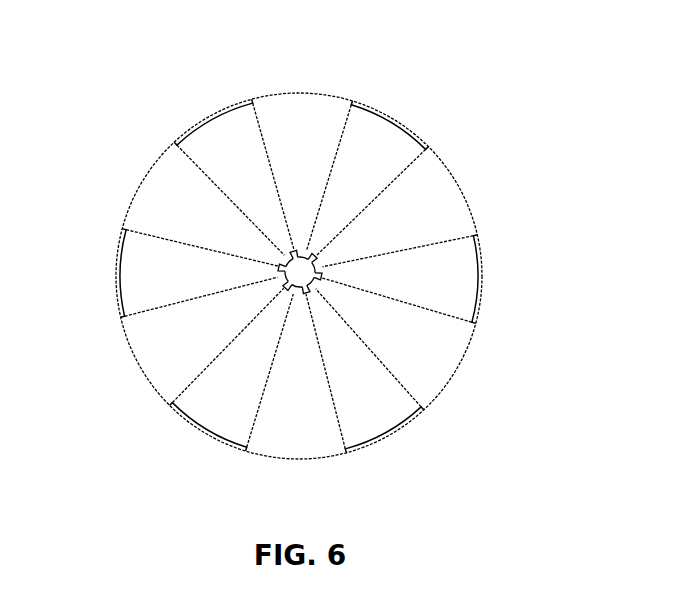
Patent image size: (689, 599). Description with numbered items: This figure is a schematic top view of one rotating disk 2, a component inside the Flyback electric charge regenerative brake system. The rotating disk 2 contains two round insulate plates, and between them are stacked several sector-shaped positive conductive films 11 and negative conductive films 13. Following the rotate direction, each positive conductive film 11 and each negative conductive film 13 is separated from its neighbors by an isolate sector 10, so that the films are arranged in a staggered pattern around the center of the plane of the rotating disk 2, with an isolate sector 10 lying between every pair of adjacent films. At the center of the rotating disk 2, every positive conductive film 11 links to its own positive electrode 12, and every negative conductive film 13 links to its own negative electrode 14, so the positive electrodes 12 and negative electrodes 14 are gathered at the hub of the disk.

The rotating disk 2 is at (356, 58).
The isolate sector 10 is at (302, 110).
The positive conductive film 11 is at (221, 128).
The positive electrode 12 is at (271, 258).
The negative conductive film 13 is at (384, 127).
The negative electrode 14 is at (325, 256).